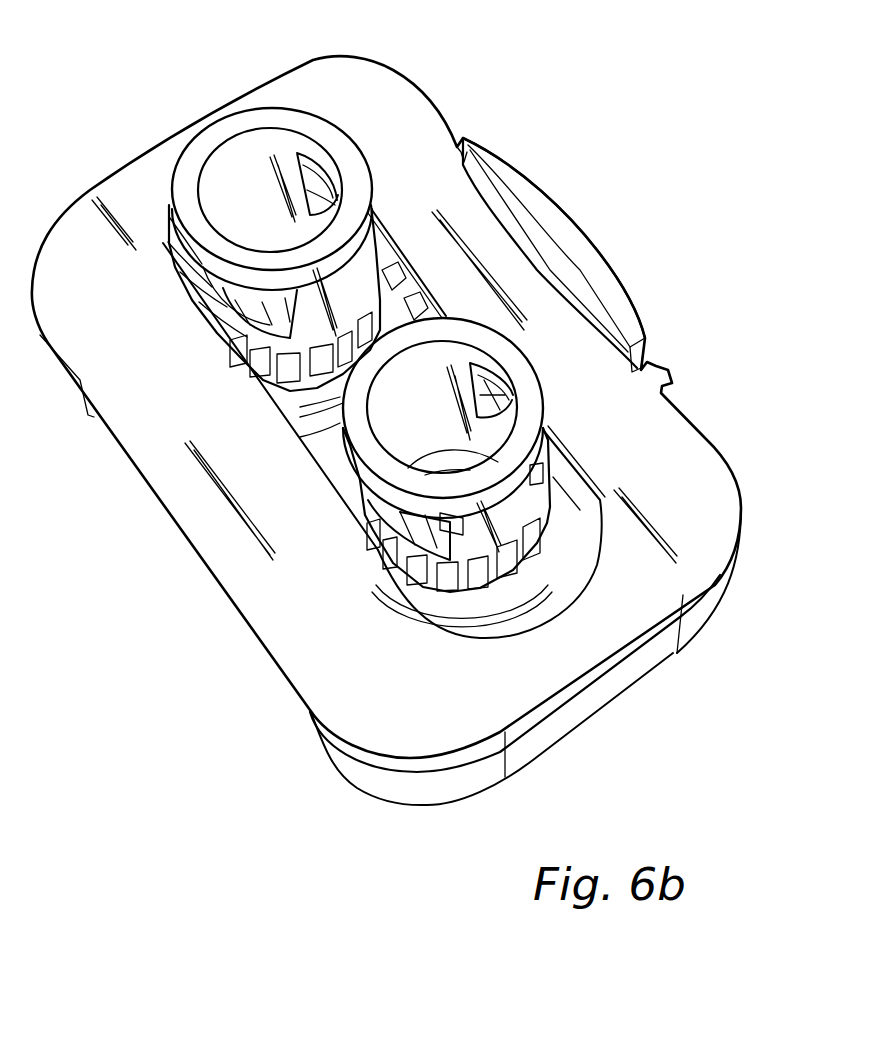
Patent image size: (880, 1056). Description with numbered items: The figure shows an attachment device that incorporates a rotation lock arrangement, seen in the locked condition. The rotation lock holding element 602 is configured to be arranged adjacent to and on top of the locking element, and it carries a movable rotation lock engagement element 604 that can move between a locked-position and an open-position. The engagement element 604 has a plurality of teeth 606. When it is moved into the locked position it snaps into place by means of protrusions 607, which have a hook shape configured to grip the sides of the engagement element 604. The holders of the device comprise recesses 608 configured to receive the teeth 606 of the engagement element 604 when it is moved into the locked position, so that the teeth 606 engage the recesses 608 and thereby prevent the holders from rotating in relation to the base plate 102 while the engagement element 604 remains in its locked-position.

The base plate 102 is at (640, 663).
The rotation lock holding element 602 is at (670, 462).
The rotation lock engagement element 604 is at (572, 250).
The teeth 606 is at (373, 252).
The protrusions 607 is at (462, 145).
The recesses 608 is at (495, 550).